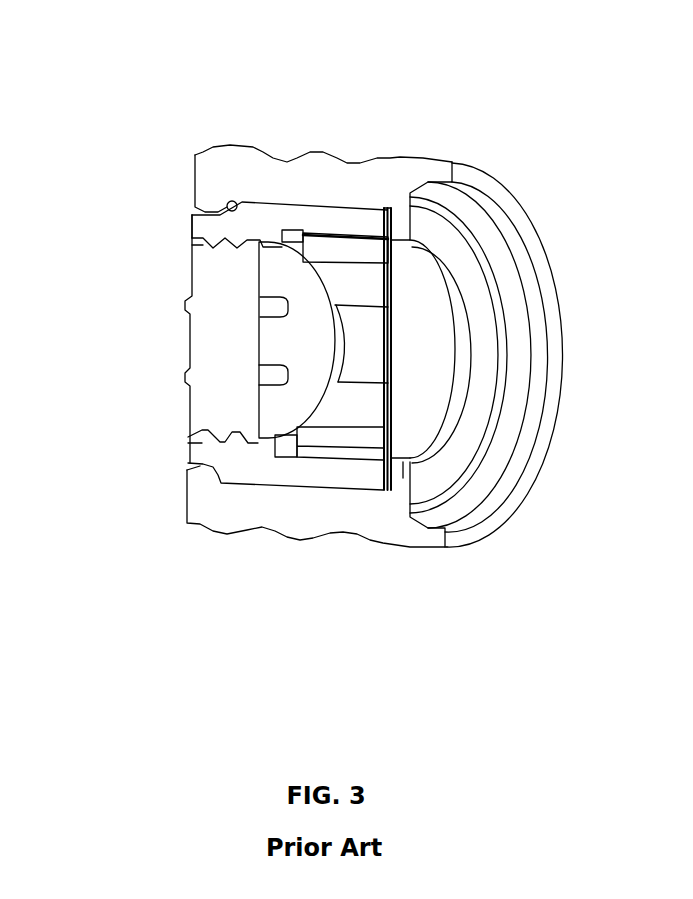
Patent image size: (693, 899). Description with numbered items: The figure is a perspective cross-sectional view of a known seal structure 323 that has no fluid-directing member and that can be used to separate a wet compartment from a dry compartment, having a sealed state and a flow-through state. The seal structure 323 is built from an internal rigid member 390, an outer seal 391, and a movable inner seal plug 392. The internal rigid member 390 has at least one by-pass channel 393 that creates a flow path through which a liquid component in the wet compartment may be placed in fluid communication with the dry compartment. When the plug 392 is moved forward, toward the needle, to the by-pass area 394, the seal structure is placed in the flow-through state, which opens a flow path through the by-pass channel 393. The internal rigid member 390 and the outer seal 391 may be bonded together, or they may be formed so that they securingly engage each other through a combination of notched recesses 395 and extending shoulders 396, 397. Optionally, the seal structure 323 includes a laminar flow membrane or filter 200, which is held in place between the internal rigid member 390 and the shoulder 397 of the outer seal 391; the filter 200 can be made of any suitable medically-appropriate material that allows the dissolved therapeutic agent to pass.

The seal structure 323 is at (194, 122).
The extending shoulder 396 is at (210, 200).
The notched recess 395 is at (233, 207).
The internal rigid member 390 is at (190, 223).
The by-pass channel 393 is at (355, 248).
The inner seal plug 392 is at (188, 338).
The by-pass area 394 is at (360, 343).
The laminar flow membrane or filter 200 is at (423, 378).
The extending shoulder 397 is at (393, 470).
The outer seal 391 is at (298, 539).